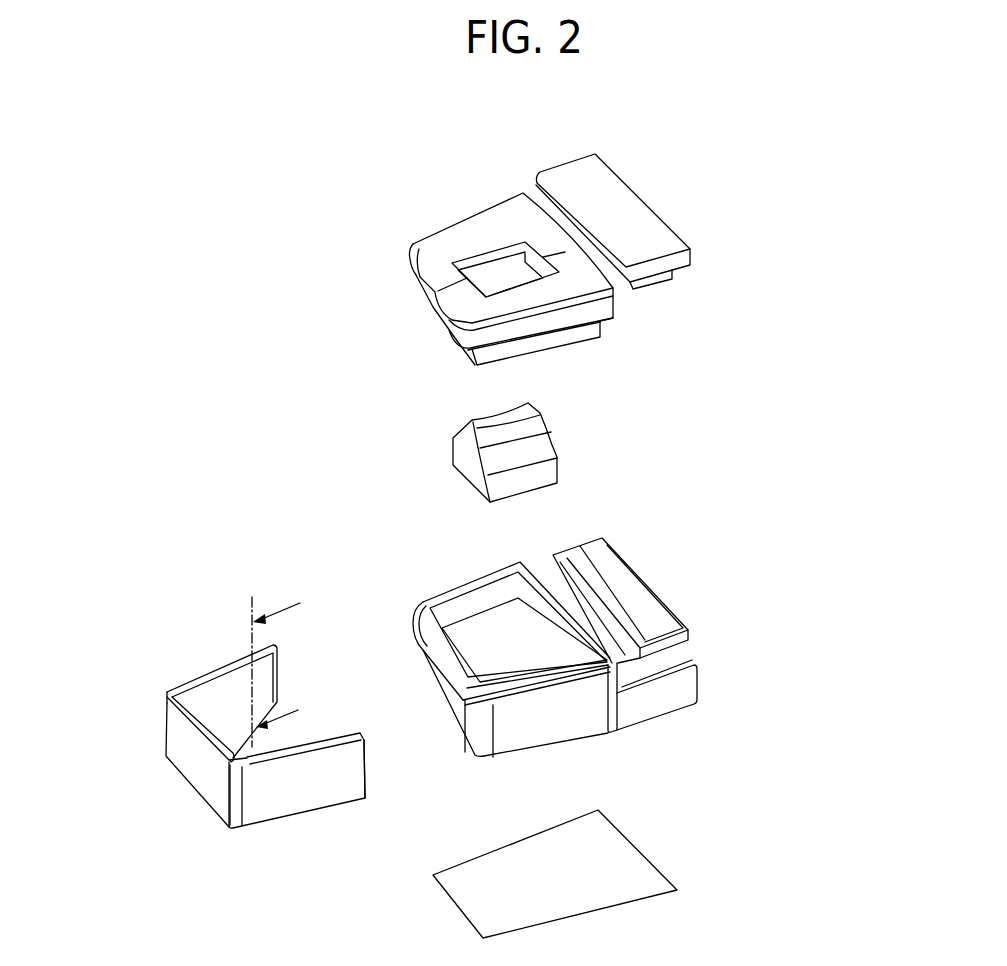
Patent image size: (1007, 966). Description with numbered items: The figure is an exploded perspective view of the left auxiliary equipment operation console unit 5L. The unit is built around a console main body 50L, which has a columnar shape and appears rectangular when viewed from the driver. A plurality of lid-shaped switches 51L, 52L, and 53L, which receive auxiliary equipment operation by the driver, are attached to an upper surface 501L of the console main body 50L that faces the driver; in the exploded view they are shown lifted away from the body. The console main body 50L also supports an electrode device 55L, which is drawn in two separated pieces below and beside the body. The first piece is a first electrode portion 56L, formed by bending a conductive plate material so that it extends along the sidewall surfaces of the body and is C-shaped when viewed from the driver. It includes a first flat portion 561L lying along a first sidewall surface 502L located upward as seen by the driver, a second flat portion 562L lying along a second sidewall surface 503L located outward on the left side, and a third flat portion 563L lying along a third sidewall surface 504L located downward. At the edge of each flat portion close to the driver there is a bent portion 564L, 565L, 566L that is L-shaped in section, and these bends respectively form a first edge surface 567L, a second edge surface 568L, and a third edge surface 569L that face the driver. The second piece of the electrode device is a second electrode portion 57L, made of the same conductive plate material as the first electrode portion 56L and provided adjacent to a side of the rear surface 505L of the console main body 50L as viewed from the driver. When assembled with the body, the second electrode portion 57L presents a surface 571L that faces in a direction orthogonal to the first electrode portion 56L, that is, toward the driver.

The left auxiliary equipment operation console unit 5L is at (788, 188).
The console main body 50L is at (700, 562).
The lid-shaped switch 51L is at (595, 165).
The lid-shaped switch 52L is at (468, 223).
The lid-shaped switch 53L is at (466, 459).
The electrode device 55L is at (217, 862).
The first electrode portion 56L is at (271, 831).
The second electrode portion 57L is at (467, 917).
The upper surface 501L is at (601, 553).
The first sidewall surface 502L is at (450, 588).
The second sidewall surface 503L is at (442, 700).
The third sidewall surface 504L is at (520, 733).
The rear surface 505L is at (575, 733).
The first flat portion 561L is at (278, 665).
The second flat portion 562L is at (174, 729).
The third flat portion 563L is at (313, 801).
The bent portion 564L is at (220, 663).
The bent portion 565L is at (221, 754).
The bent portion 566L is at (366, 748).
The first edge surface 567L is at (188, 680).
The second edge surface 568L is at (185, 771).
The third edge surface 569L is at (331, 746).
The surface 571L is at (643, 873).